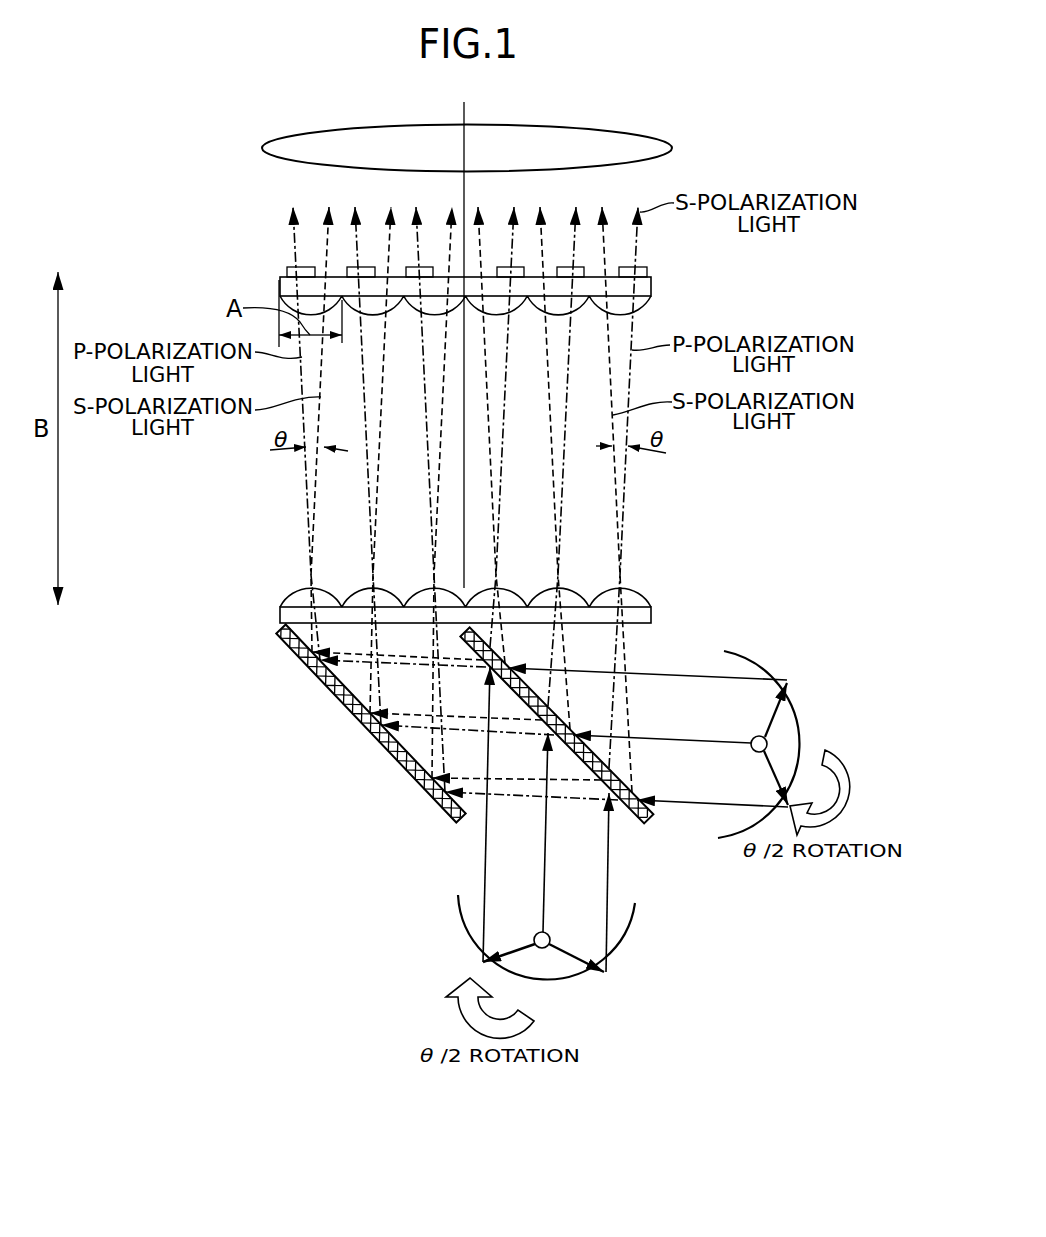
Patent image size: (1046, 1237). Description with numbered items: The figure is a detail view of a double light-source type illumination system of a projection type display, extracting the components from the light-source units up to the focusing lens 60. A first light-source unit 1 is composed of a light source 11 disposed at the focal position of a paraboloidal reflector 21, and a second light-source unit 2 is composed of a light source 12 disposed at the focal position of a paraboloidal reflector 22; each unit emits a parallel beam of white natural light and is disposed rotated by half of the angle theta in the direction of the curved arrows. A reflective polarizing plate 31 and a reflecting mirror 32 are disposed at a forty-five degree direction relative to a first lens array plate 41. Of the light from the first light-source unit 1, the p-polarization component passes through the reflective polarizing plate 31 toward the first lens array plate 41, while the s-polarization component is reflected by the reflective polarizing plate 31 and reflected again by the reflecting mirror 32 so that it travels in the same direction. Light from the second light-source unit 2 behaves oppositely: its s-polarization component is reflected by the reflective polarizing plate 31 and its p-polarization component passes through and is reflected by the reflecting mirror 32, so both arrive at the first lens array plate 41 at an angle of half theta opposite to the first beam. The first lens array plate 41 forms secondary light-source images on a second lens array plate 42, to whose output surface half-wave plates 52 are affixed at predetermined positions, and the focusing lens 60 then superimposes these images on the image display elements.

The first light-source unit 1 is at (390, 905).
The second light-source unit 2 is at (787, 598).
The light source 11 is at (534, 937).
The light source 12 is at (766, 738).
The paraboloidal reflector 21 is at (465, 940).
The paraboloidal reflector 22 is at (745, 655).
The reflective polarizing plate 31 is at (647, 822).
The reflecting mirror 32 is at (347, 700).
The first lens array plate 41 is at (652, 614).
The second lens array plate 42 is at (650, 290).
The half-wave plates 52 is at (641, 271).
The focusing lens 60 is at (648, 133).